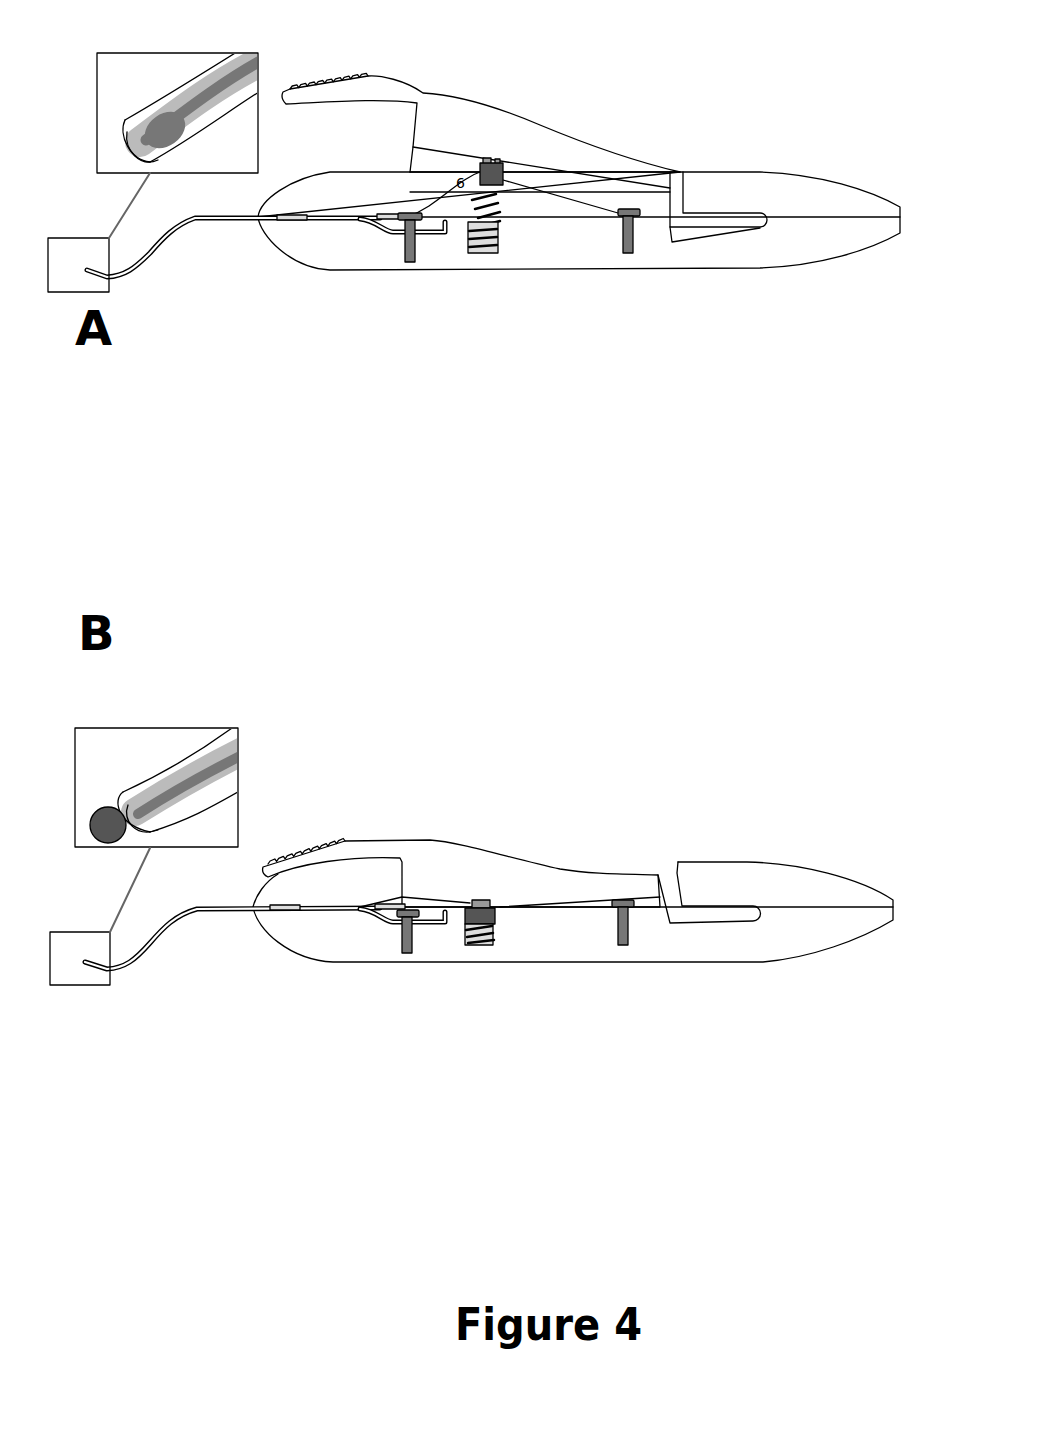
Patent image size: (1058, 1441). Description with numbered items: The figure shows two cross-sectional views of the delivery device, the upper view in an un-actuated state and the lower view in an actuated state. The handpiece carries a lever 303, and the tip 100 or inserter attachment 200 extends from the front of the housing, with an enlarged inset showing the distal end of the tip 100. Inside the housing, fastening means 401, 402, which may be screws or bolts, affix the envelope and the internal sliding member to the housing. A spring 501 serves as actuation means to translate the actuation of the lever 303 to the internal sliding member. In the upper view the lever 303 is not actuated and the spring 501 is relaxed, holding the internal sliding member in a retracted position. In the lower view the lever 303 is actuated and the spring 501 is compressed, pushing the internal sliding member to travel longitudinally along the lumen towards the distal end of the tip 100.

In FIG. 4A, the tip 100 is at (179, 144).
In FIG. 4B, the tip 100 is at (161, 830).
In FIG. 4A, the inserter attachment 200 is at (170, 257).
In FIG. 4B, the inserter attachment 200 is at (174, 953).
In FIG. 4A, the lever 303 is at (424, 88).
In FIG. 4B, the lever 303 is at (423, 840).
In FIG. 4A, the fastening means 401 is at (403, 250).
In FIG. 4B, the fastening means 401 is at (403, 953).
In FIG. 4A, the fastening means 402 is at (638, 220).
In FIG. 4B, the fastening means 402 is at (632, 922).
In FIG. 4A, the spring 501 is at (499, 226).
In FIG. 4B, the spring 501 is at (490, 923).